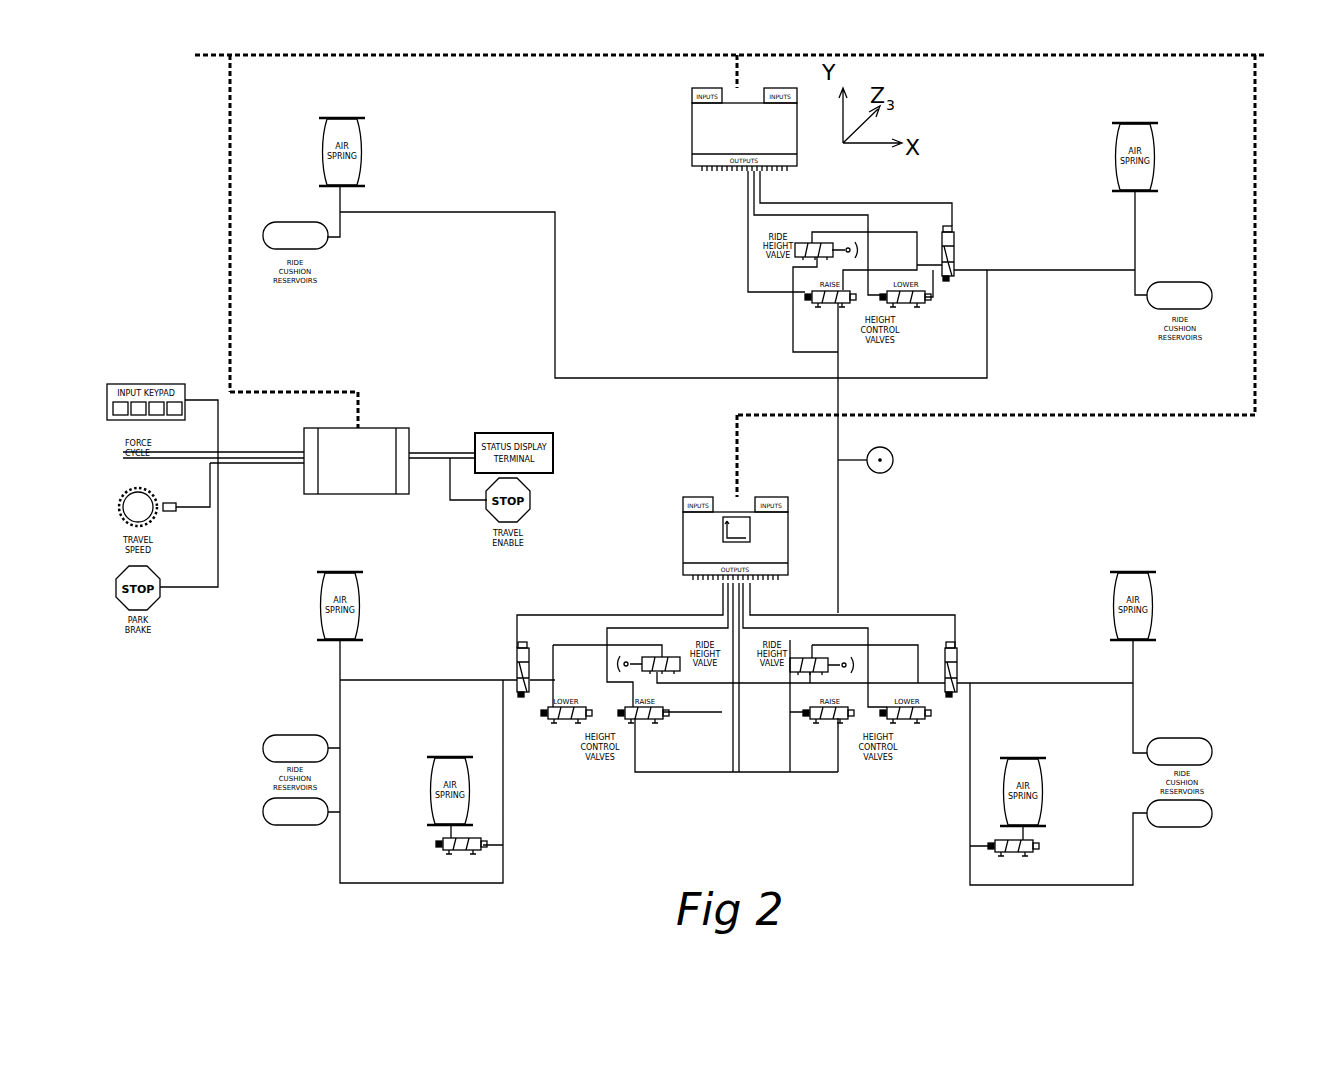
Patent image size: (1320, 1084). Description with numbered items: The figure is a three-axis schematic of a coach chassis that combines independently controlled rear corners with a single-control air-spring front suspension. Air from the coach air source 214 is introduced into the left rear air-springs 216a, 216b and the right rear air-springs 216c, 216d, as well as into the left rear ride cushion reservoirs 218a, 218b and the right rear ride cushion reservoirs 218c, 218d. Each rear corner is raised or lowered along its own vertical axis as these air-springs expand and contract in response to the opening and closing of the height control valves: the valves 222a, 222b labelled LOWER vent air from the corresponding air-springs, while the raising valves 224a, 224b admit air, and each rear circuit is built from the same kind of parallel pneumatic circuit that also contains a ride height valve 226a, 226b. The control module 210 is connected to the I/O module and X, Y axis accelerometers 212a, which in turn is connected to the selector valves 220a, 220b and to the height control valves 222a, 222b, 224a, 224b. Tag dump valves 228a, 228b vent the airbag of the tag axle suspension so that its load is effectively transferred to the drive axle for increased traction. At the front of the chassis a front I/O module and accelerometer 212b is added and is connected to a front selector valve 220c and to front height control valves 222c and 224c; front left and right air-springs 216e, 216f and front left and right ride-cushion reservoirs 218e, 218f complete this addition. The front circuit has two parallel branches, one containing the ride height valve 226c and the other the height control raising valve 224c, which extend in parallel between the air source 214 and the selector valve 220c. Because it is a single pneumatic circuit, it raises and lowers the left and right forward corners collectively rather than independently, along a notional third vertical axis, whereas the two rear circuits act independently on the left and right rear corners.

The control module 210 is at (388, 428).
The I/O module and X, Y axis accelerometers 212a is at (700, 532).
The front I/O module and accelerometer 212b is at (710, 124).
The coach air source 214 is at (877, 473).
The left rear air-spring 216a is at (345, 605).
The left rear air-spring 216b is at (445, 770).
The right rear air-spring 216c is at (1140, 605).
The right rear air-spring 216d is at (1025, 770).
The front left air-spring 216e is at (345, 120).
The front right air-spring 216f is at (1115, 148).
The left rear ride cushion reservoir 218a is at (275, 745).
The left rear ride cushion reservoir 218b is at (280, 812).
The right rear ride cushion reservoir 218c is at (1180, 748).
The right rear ride cushion reservoir 218d is at (1175, 815).
The front left ride-cushion reservoir 218e is at (312, 242).
The front right ride-cushion reservoir 218f is at (1178, 285).
The selector valve 220a is at (510, 672).
The selector valve 220b is at (950, 680).
The front selector valve 220c is at (955, 262).
The height control valve (LOWER) 222a is at (560, 722).
The height control valve (LOWER) 222b is at (920, 722).
The front height control valve 222c is at (920, 300).
The height control valve (RAISE) 224a is at (640, 722).
The height control valve (RAISE) 224b is at (830, 722).
The front height control raising valve 224c is at (818, 300).
The ride height valve 226a is at (660, 657).
The ride height valve 226b is at (805, 660).
The ride height valve 226c is at (815, 248).
The tag dump valve 228a is at (475, 850).
The tag dump valve 228b is at (1025, 852).